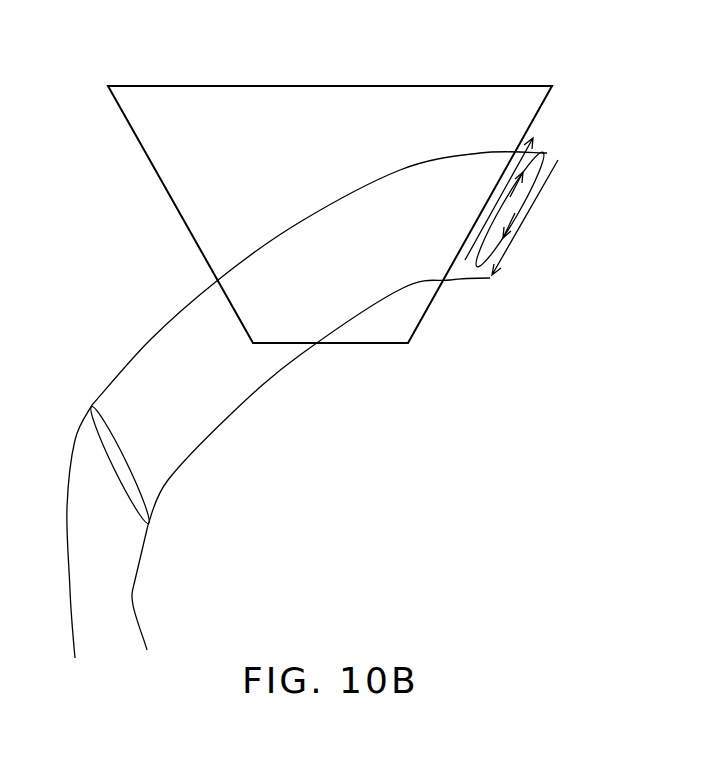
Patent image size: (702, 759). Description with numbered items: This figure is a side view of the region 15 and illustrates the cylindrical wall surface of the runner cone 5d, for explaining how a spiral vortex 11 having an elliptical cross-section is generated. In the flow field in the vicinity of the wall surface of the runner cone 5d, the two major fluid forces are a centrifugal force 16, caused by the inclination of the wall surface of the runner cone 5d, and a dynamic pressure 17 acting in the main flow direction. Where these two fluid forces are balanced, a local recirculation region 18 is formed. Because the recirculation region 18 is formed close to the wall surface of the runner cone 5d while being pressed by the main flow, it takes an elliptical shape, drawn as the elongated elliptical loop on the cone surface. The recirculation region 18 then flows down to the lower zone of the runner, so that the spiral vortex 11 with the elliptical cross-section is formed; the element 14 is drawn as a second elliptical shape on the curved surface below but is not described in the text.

The region 15 is at (354, 42).
The runner cone 5d is at (208, 247).
The spiral vortex 11 is at (168, 477).
The elliptical contact region 14 is at (145, 498).
The centrifugal force 16 is at (503, 190).
The dynamic pressure 17 is at (512, 243).
The recirculation region 18 is at (547, 153).